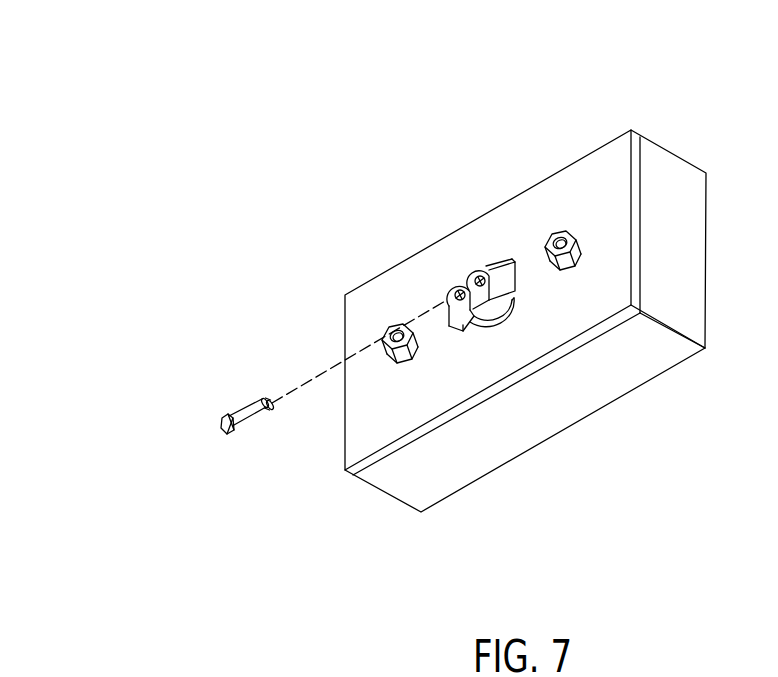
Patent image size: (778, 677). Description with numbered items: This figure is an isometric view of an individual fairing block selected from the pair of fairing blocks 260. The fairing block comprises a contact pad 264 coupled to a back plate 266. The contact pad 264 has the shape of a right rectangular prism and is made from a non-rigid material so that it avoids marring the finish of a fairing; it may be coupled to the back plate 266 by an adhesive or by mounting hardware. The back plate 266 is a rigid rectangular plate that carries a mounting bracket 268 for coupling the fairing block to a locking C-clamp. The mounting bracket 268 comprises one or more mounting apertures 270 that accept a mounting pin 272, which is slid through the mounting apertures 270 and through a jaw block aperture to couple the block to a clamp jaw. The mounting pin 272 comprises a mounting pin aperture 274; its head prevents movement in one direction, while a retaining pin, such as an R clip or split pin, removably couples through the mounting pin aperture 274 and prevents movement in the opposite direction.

The pair of fairing blocks 260 is at (147, 180).
The contact pad 264 is at (412, 488).
The back plate 266 is at (407, 292).
The mounting bracket 268 is at (478, 323).
The mounting apertures 270 is at (460, 293).
The mounting pin 272 is at (247, 415).
The mounting pin aperture 274 is at (263, 410).